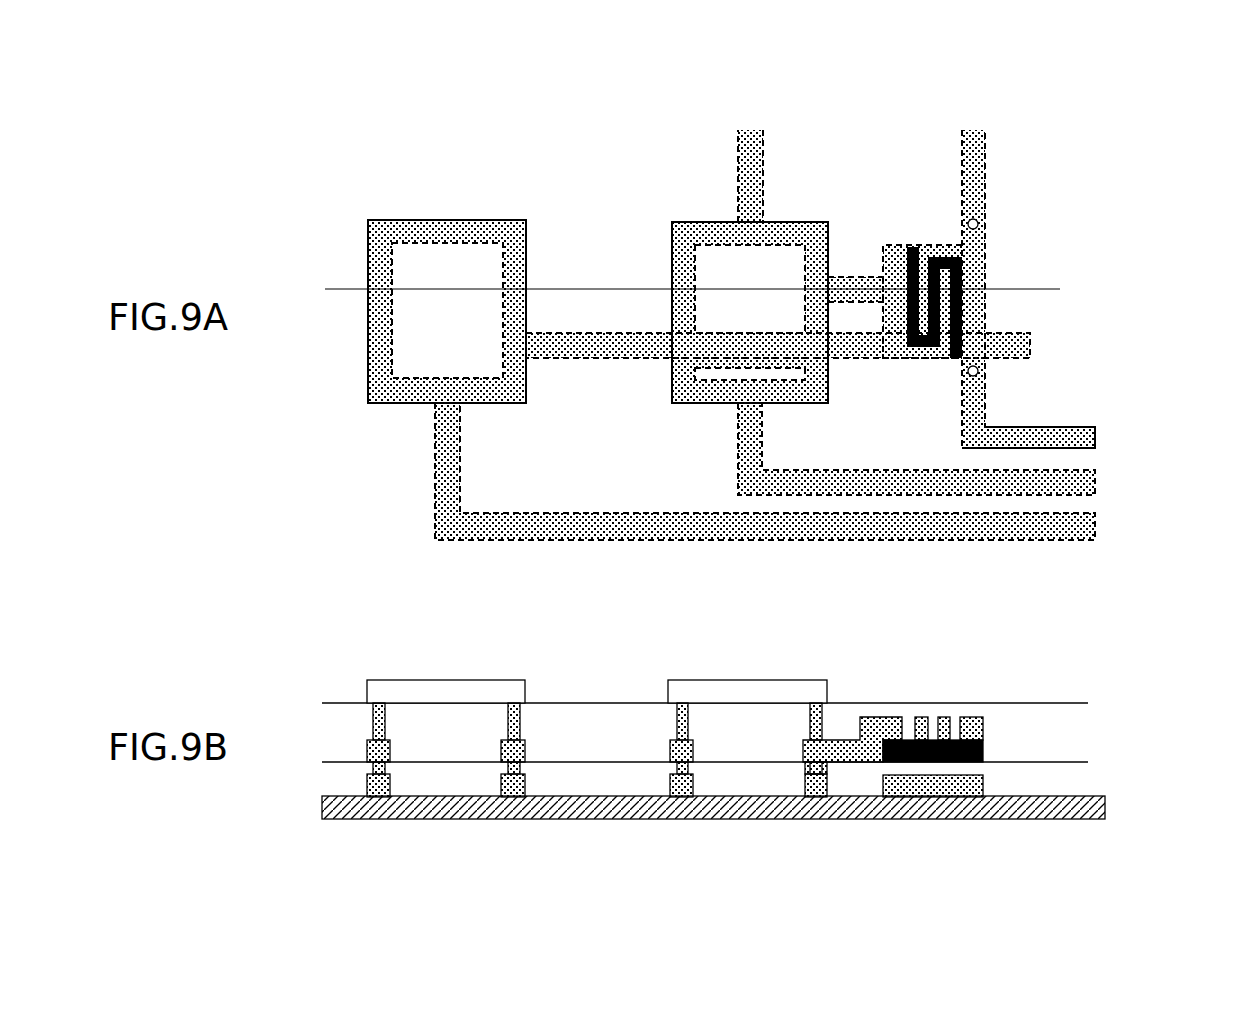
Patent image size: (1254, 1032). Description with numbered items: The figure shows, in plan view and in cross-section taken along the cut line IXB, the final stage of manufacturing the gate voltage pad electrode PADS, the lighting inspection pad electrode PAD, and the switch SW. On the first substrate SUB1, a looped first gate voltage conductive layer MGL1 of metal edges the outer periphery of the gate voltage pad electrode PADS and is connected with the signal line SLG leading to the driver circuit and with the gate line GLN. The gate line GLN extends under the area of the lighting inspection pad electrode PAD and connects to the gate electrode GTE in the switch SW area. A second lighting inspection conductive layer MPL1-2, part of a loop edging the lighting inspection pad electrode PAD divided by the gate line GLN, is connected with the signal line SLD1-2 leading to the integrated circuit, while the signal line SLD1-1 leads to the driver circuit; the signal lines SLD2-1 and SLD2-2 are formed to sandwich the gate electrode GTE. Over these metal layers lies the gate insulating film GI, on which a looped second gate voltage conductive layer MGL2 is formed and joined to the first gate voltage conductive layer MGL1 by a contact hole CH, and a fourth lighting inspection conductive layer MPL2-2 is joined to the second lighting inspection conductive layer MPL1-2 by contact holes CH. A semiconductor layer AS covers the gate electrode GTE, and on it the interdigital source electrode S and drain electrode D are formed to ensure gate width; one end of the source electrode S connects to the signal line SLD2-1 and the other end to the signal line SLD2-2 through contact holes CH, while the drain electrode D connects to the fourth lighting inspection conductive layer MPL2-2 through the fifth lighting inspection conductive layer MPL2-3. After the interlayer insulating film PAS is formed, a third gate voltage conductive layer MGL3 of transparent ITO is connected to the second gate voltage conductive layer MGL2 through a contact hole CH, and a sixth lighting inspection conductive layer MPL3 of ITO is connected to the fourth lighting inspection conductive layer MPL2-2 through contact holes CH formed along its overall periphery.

In FIG. 9A, the gate voltage pad electrode PADS is at (426, 208).
In FIG. 9A, the lighting inspection pad electrode PAD is at (706, 214).
In FIG. 9A, the switch SW is at (930, 236).
In FIG. 9A, the third gate voltage conductive layer MGL3 is at (457, 216).
In FIG. 9B, the third gate voltage conductive layer MGL3 is at (422, 677).
In FIG. 9A, the sixth lighting inspection conductive layer MPL3 is at (687, 250).
In FIG. 9B, the sixth lighting inspection conductive layer MPL3 is at (737, 677).
In FIG. 9A, the signal line SLD1-2 is at (770, 178).
In FIG. 9A, the signal line SLD2-2 is at (990, 178).
In FIG. 9A, the signal line SLD1-1 is at (1097, 485).
In FIG. 9A, the signal line SLD2-1 is at (1097, 437).
In FIG. 9A, the signal line SLG is at (1097, 530).
In FIG. 9A, the gate line GLN is at (594, 363).
In FIG. 9A, the contact hole CH is at (980, 223).
In FIG. 9B, the contact hole CH is at (389, 720).
In FIG. 9A, the source electrode S is at (990, 267).
In FIG. 9B, the source electrode S is at (943, 715).
In FIG. 9A, the drain electrode D is at (893, 358).
In FIG. 9B, the drain electrode D is at (892, 715).
In FIG. 9A, the cut line IXB is at (333, 293).
In FIG. 9B, the interlayer insulating film PAS is at (1090, 728).
In FIG. 9B, the gate insulating film GI is at (1090, 775).
In FIG. 9B, the first substrate SUB1 is at (1098, 808).
In FIG. 9B, the semiconductor layer AS is at (990, 748).
In FIG. 9B, the gate electrode GTE is at (946, 791).
In FIG. 9B, the second gate voltage conductive layer MGL2 is at (365, 749).
In FIG. 9B, the first gate voltage conductive layer MGL1 is at (377, 794).
In FIG. 9B, the fourth lighting inspection conductive layer MPL2-2 is at (667, 752).
In FIG. 9B, the fifth lighting inspection conductive layer MPL2-3 is at (838, 735).
In FIG. 9B, the second lighting inspection conductive layer MPL1-2 is at (681, 795).